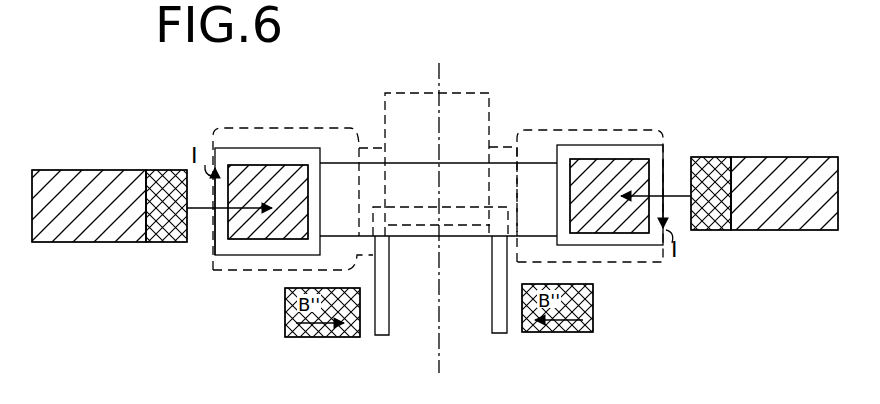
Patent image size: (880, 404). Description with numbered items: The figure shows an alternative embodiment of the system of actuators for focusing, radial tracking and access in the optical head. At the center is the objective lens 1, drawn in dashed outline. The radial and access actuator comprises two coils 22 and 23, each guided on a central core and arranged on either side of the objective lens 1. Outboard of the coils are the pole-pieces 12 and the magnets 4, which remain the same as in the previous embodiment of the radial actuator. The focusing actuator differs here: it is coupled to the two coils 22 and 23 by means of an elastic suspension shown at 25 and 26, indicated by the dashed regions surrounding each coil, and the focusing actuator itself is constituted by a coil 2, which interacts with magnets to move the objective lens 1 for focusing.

The objective lens 1 is at (490, 108).
The coil 2 is at (389, 325).
The magnets 4 is at (163, 170).
The pole-pieces 12 is at (93, 170).
The coil 22 is at (213, 262).
The coil 23 is at (600, 262).
The elastic suspension 25 is at (590, 130).
The elastic suspension 26 is at (305, 128).